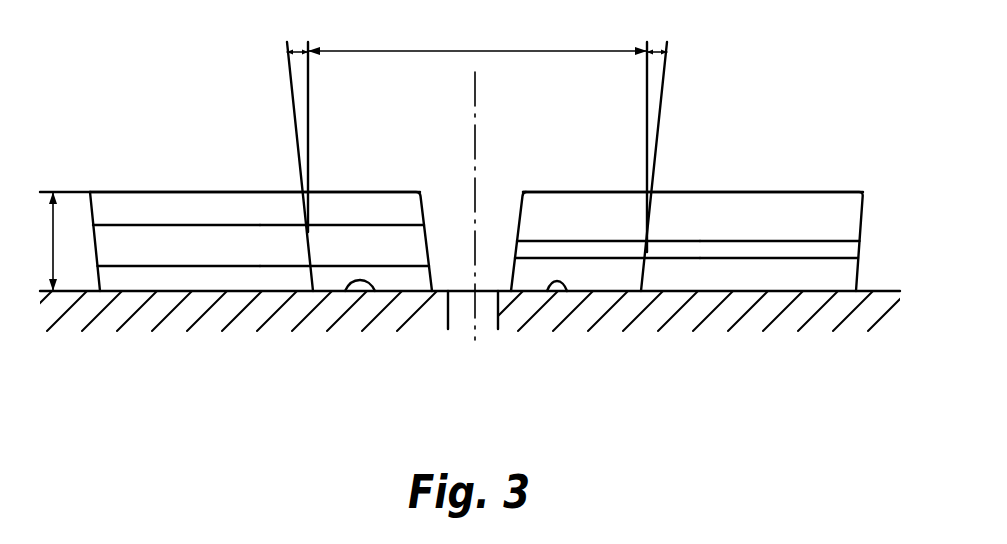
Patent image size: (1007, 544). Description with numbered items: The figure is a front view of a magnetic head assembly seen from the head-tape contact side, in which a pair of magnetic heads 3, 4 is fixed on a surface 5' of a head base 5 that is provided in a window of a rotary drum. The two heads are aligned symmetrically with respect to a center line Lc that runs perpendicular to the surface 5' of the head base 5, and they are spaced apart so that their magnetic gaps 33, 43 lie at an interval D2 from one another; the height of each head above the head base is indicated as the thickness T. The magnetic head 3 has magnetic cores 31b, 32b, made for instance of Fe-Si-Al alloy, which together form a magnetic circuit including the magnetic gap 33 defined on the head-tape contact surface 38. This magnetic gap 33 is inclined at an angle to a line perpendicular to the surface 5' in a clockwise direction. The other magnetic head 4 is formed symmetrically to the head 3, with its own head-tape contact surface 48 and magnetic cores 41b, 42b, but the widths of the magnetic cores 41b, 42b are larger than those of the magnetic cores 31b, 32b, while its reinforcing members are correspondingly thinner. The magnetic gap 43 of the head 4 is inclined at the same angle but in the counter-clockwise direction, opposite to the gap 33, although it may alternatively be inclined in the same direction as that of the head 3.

The magnetic head 3 is at (687, 222).
The magnetic head 4 is at (250, 222).
The head base 5 is at (460, 346).
The surface of head base 5' is at (434, 341).
The magnetic core 31b is at (800, 247).
The magnetic core 32b is at (606, 247).
The magnetic gap 33 is at (648, 249).
The head-tape contact surface 38 is at (822, 197).
The magnetic core 41b is at (128, 247).
The magnetic core 42b is at (400, 243).
The magnetic gap 43 is at (306, 249).
The head-tape contact surface 48 is at (133, 206).
The thickness T is at (42, 241).
The interval between magnetic gaps D2 is at (477, 33).
The center line Lc is at (475, 173).